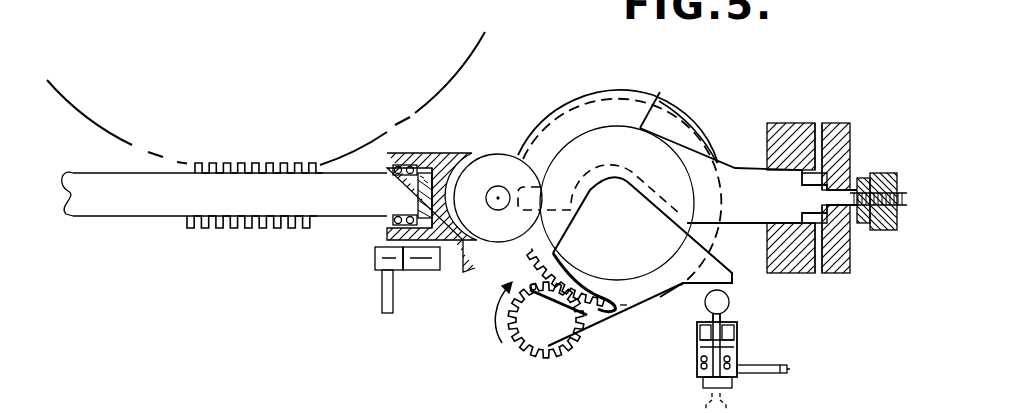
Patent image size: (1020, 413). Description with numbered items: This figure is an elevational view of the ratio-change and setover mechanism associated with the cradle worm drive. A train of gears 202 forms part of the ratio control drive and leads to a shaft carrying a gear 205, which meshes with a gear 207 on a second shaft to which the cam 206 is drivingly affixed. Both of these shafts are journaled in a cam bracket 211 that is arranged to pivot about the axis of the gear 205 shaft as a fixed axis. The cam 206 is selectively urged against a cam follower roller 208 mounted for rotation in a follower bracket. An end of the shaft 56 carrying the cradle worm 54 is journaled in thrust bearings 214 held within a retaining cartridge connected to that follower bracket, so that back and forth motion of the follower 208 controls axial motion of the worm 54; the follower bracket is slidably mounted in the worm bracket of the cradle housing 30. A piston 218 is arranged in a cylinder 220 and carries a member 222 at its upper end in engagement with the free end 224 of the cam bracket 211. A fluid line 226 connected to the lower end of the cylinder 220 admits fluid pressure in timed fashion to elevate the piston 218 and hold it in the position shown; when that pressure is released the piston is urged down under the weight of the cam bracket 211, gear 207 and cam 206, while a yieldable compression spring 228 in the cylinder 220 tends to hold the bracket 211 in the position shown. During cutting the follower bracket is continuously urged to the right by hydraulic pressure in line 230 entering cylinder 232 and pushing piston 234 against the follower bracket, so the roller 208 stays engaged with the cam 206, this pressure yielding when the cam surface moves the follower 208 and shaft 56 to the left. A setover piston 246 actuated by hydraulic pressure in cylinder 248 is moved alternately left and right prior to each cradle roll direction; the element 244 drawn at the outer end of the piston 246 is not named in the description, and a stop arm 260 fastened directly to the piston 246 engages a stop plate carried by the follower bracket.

The cradle housing 30 is at (848, 123).
The cradle worm 54 is at (222, 223).
The shaft 56 is at (112, 210).
The train of gears 202 is at (372, 3).
The gear 205 is at (522, 350).
The cam 206 is at (706, 92).
The gear 207 is at (523, 262).
The cam follower roller 208 is at (488, 163).
The cam bracket 211 is at (638, 255).
The thrust bearings 214 is at (405, 163).
The piston 218 is at (737, 353).
The cylinder 220 is at (697, 353).
The member 222 is at (731, 305).
The free end 224 is at (702, 259).
The fluid line 226 is at (760, 375).
The compression spring 228 is at (697, 363).
The line 230 is at (387, 313).
The cylinder 232 is at (377, 262).
The piston 234 is at (422, 270).
The nut 244 is at (903, 130).
The setover piston 246 is at (805, 213).
The cylinder 248 is at (817, 224).
The stop arm 260 is at (547, 120).